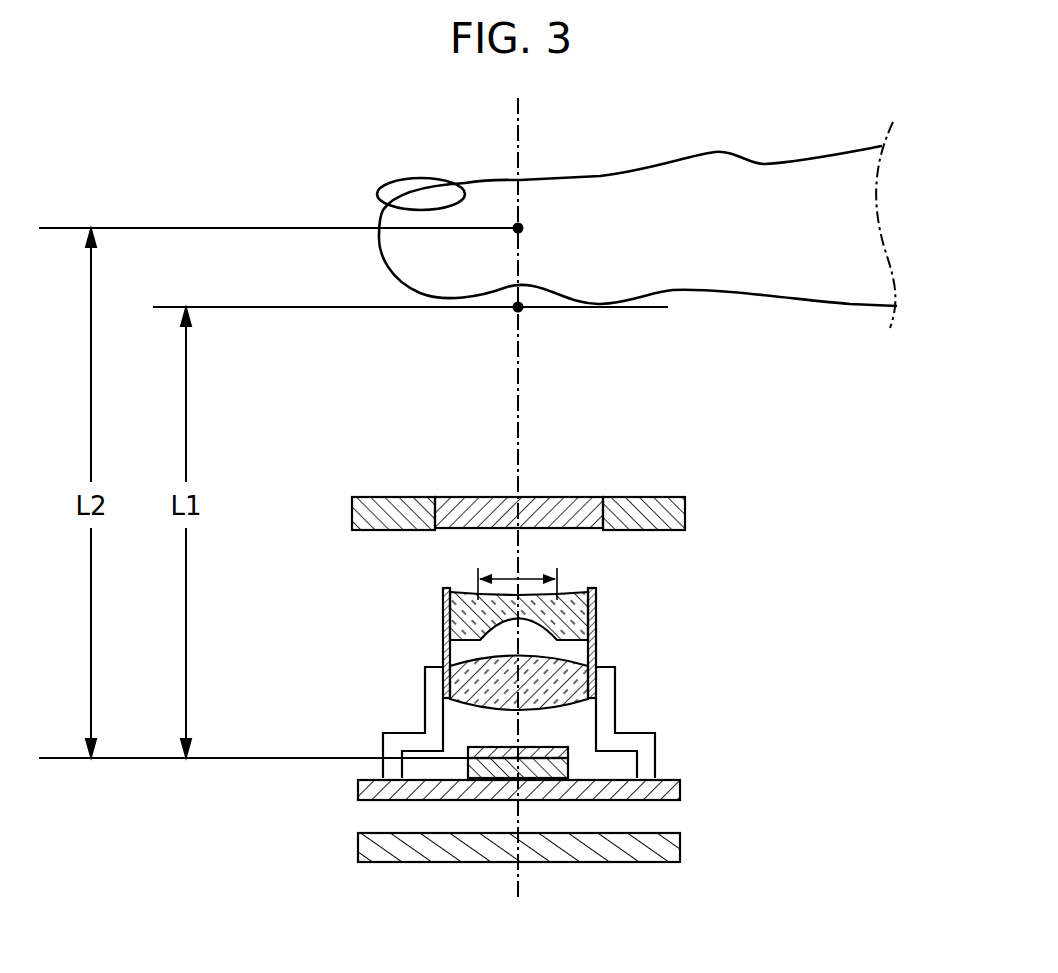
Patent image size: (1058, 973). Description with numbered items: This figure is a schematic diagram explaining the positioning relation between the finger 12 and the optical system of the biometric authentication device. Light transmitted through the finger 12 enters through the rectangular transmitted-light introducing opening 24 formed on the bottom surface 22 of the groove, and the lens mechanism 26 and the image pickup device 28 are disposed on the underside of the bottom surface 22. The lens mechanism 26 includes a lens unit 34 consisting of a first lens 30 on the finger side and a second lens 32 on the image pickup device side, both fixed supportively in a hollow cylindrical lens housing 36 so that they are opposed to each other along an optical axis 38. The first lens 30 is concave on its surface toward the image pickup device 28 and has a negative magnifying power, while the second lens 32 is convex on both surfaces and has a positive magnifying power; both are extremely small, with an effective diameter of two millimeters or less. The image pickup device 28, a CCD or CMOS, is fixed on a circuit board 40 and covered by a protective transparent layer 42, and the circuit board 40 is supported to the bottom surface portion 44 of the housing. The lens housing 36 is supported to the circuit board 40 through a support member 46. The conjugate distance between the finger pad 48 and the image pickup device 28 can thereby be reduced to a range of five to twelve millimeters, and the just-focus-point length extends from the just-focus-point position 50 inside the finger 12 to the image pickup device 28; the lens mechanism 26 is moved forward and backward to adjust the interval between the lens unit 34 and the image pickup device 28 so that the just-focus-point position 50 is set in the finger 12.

The finger 12 is at (582, 178).
The bottom surface 22 is at (524, 475).
The transmitted-light introducing opening 24 is at (568, 511).
The lens mechanism 26 is at (348, 580).
The image pickup device 28 is at (572, 772).
The first lens 30 is at (443, 617).
The second lens 32 is at (443, 681).
The lens unit 34 is at (333, 615).
The lens housing 36 is at (598, 620).
The optical axis 38 is at (522, 385).
The circuit board 40 is at (681, 792).
The transparent layer 42 is at (572, 750).
The bottom surface portion 44 is at (681, 845).
The support member 46 is at (616, 698).
The finger pad 48 is at (522, 311).
The just-focus-point position 50 is at (524, 228).